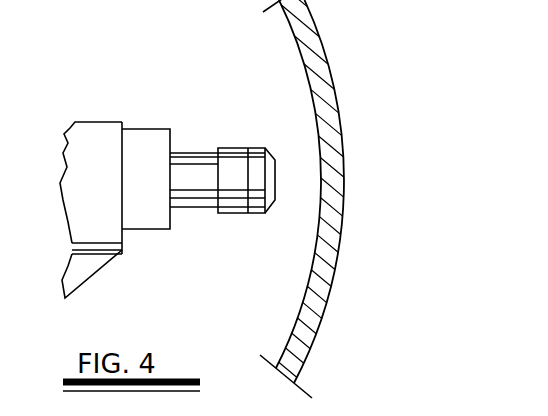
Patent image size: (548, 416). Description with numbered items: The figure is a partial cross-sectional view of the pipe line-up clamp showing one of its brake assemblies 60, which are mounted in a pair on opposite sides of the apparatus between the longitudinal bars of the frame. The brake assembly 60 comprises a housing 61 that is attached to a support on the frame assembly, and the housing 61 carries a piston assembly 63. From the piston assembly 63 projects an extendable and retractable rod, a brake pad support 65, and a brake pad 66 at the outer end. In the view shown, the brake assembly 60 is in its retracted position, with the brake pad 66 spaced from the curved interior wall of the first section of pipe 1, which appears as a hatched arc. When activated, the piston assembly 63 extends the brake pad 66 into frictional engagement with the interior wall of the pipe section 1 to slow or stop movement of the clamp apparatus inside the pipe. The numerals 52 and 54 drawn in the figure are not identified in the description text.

The first section of pipe 1 is at (333, 185).
The brake assembly 60 is at (125, 113).
The housing 61 is at (95, 129).
The mounting plate 52 is at (97, 250).
The piston assembly 63 is at (155, 150).
The shaft 54 is at (195, 193).
The brake pad support 65 is at (235, 163).
The brake pad 66 is at (257, 202).